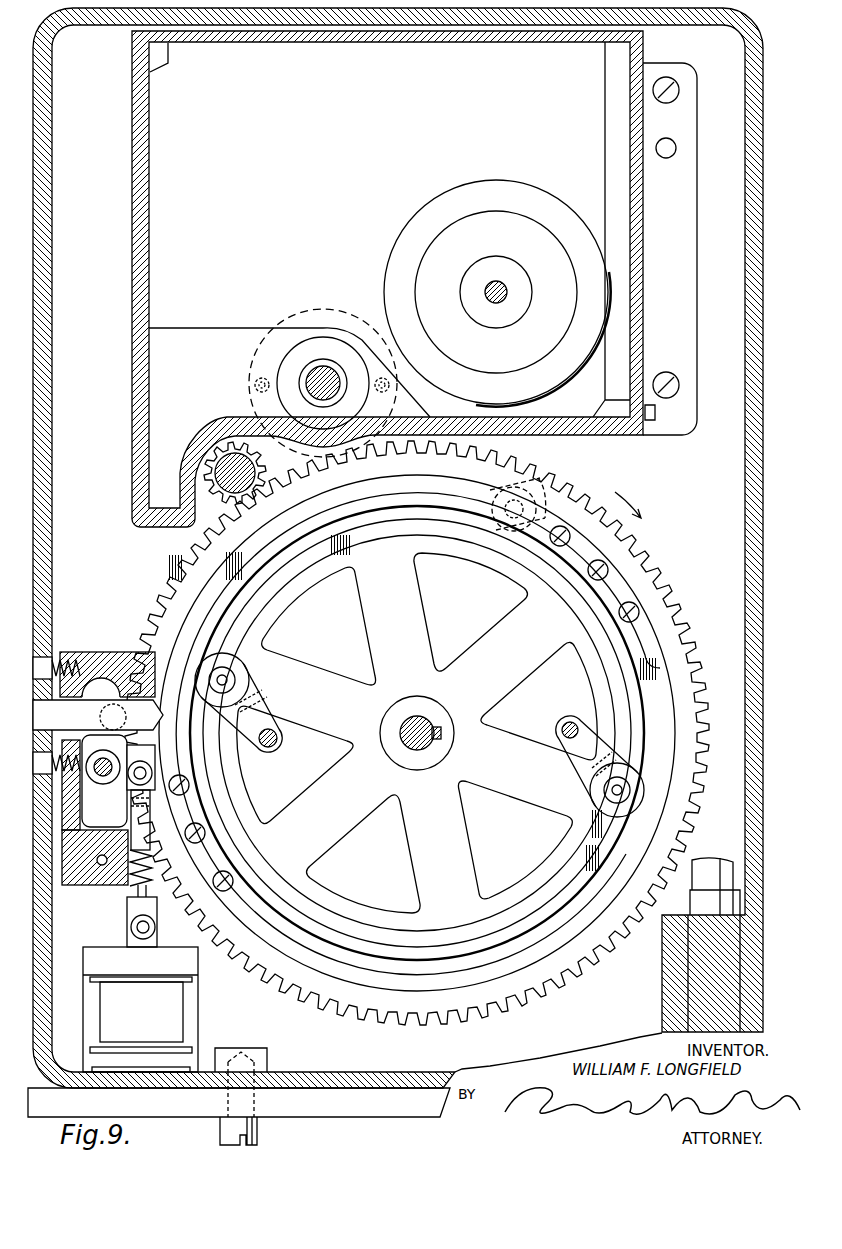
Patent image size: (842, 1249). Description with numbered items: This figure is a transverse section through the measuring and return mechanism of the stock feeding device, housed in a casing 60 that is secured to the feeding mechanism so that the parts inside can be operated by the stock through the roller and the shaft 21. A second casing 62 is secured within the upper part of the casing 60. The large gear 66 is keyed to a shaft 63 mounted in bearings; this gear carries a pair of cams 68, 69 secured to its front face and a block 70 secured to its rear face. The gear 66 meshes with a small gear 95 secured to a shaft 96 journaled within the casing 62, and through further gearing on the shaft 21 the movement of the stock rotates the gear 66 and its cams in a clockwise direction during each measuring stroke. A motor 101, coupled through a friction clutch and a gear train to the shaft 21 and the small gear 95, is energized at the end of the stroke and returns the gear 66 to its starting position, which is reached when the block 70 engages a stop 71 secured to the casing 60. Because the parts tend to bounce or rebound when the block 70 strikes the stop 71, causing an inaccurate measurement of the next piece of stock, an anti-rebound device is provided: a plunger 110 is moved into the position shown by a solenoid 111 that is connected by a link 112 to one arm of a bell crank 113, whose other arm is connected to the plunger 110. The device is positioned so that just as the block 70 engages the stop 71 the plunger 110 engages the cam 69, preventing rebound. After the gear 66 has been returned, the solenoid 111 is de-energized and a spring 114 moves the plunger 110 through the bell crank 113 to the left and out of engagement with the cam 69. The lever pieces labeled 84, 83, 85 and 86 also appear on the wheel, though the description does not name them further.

The casing 60 is at (763, 448).
The second casing 62 is at (132, 210).
The motor 101 is at (558, 202).
The shaft 21 is at (326, 372).
The small gear 95 is at (222, 443).
The shaft 96 is at (241, 492).
The gear 66 is at (587, 970).
The block 70 is at (628, 588).
The cam 68 is at (647, 653).
The cam 69 is at (255, 918).
The shaft 63 is at (420, 750).
The stop 71 is at (538, 499).
The lever pivot 84 is at (243, 668).
The lever arm 83 is at (253, 720).
The lever arm pin 85 is at (582, 735).
The lever pivot 86 is at (603, 805).
The plunger 110 is at (152, 712).
The bell crank 113 is at (108, 810).
The spring 114 is at (155, 845).
The link 112 is at (134, 890).
The solenoid 111 is at (140, 1009).